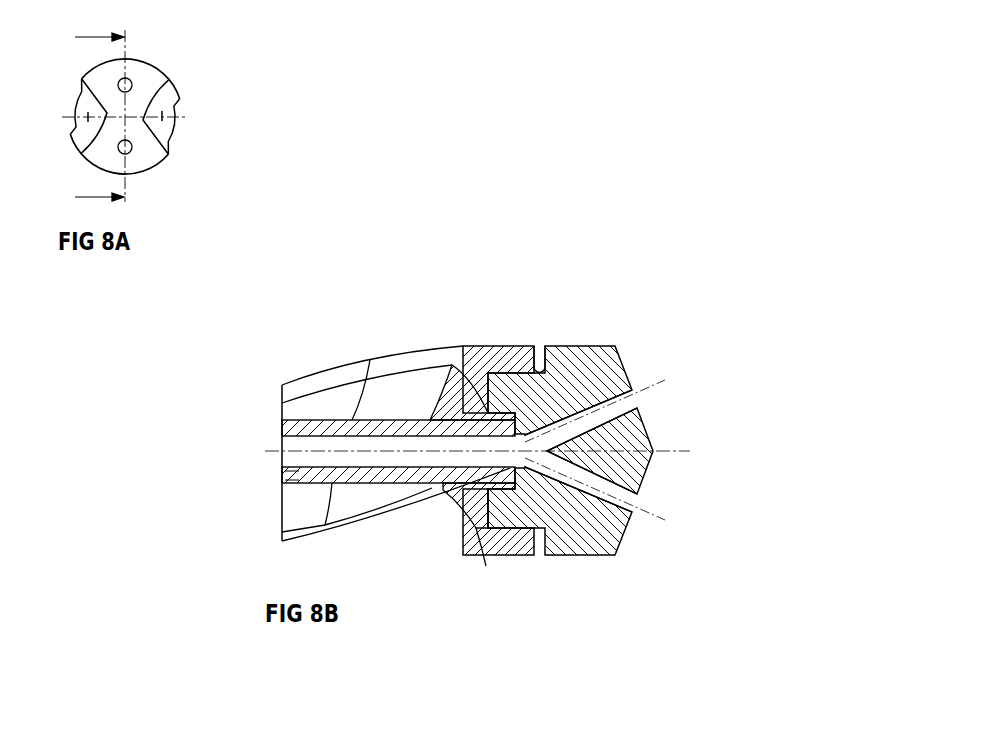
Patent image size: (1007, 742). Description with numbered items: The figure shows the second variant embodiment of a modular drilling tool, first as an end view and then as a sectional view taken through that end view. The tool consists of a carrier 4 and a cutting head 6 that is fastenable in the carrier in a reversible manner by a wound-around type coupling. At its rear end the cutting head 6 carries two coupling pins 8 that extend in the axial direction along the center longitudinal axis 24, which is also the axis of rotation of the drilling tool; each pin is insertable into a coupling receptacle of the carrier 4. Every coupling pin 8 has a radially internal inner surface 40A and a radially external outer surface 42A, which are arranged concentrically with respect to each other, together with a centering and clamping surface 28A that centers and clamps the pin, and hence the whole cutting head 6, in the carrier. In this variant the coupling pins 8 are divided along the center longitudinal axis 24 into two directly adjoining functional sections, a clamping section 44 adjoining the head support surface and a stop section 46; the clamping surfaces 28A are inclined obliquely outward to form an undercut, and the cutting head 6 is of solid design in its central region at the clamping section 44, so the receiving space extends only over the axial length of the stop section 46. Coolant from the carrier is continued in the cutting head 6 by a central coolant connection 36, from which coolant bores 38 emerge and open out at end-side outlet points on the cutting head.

The carrier 4 is at (290, 477).
The cutting head 6 is at (592, 372).
The coupling pins 8 is at (503, 500).
The center longitudinal axis 24 is at (313, 450).
The centering and clamping surface 28A is at (537, 347).
The central coolant connection 36 is at (580, 408).
The coolant bores 38 is at (605, 490).
The inner surface 40A is at (500, 418).
The outer surface 42A is at (500, 373).
The clamping section 44 is at (532, 510).
The stop section 46 is at (497, 513).